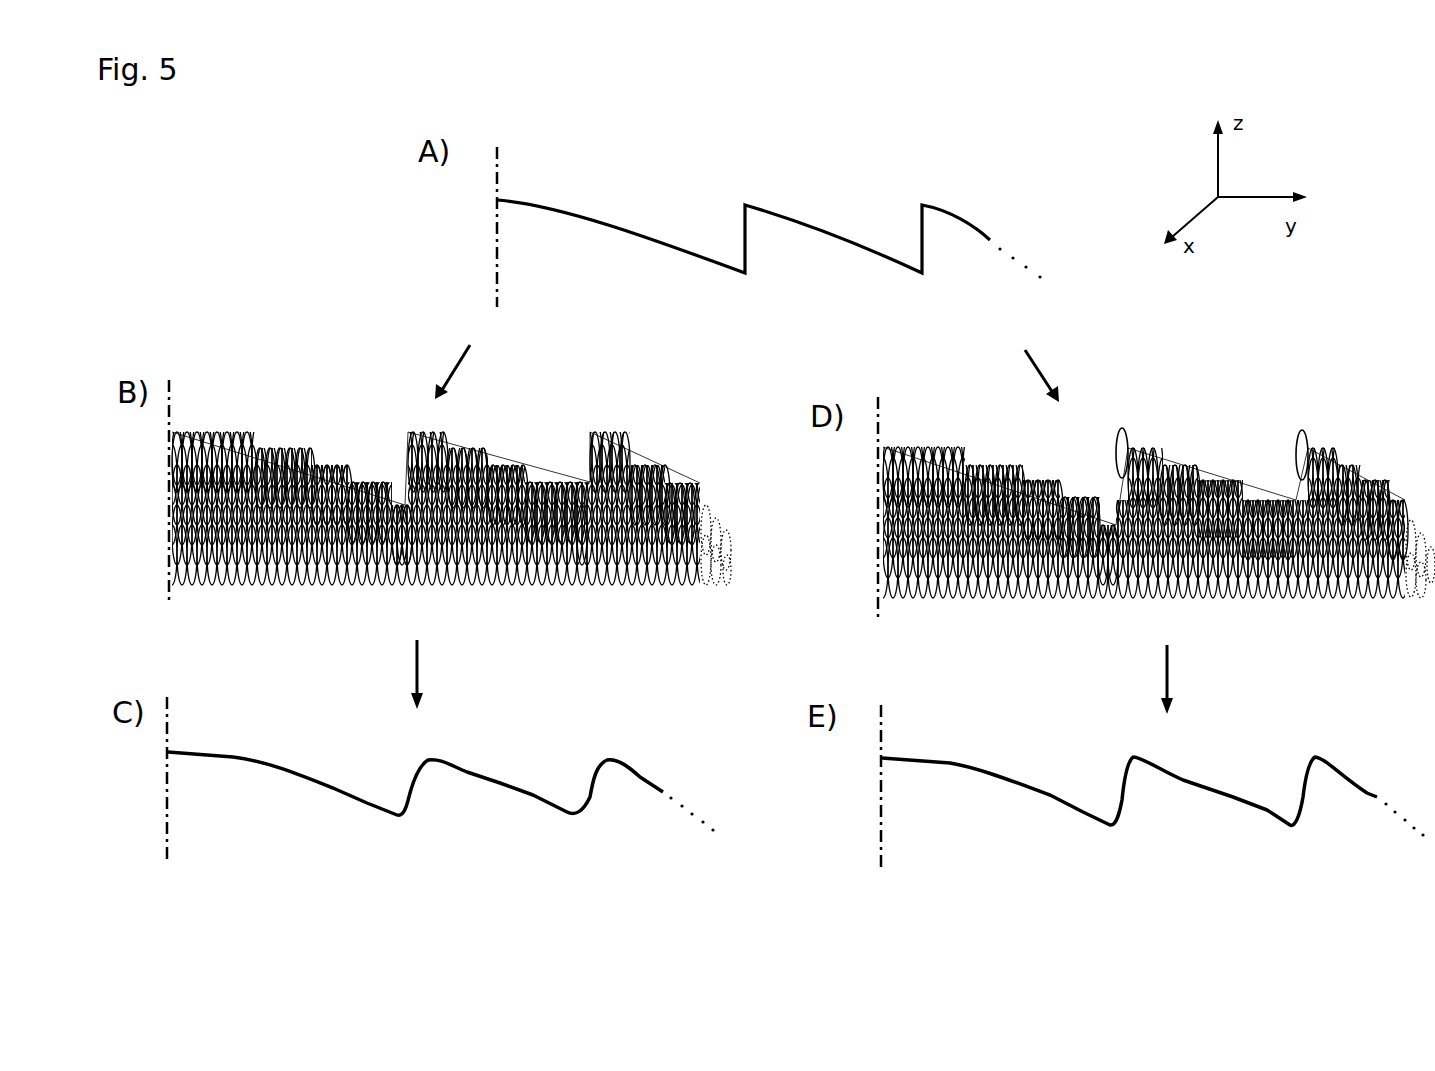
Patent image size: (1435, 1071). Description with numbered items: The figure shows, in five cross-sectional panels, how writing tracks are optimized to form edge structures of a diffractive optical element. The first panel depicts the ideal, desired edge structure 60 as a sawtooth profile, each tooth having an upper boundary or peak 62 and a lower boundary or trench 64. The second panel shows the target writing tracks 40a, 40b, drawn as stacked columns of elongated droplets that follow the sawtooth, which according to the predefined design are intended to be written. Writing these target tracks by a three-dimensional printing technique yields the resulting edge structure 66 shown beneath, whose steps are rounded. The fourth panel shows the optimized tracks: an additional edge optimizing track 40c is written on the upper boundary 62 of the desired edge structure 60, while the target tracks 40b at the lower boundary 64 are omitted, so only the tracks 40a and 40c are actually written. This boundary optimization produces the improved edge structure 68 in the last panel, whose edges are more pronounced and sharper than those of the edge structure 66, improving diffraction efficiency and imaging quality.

The edge structure 60 is at (781, 145).
The upper boundary 62 is at (909, 198).
The lower boundary 64 is at (907, 282).
The target writing track 40a is at (255, 440).
The target writing track 40b is at (407, 540).
The edge optimizing track 40c is at (1120, 452).
The resulting edge structure 66 is at (403, 743).
The improved edge structure 68 is at (1135, 738).